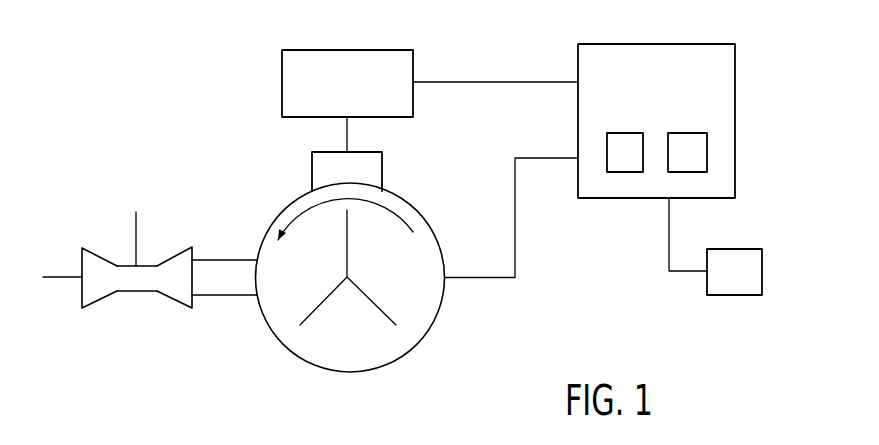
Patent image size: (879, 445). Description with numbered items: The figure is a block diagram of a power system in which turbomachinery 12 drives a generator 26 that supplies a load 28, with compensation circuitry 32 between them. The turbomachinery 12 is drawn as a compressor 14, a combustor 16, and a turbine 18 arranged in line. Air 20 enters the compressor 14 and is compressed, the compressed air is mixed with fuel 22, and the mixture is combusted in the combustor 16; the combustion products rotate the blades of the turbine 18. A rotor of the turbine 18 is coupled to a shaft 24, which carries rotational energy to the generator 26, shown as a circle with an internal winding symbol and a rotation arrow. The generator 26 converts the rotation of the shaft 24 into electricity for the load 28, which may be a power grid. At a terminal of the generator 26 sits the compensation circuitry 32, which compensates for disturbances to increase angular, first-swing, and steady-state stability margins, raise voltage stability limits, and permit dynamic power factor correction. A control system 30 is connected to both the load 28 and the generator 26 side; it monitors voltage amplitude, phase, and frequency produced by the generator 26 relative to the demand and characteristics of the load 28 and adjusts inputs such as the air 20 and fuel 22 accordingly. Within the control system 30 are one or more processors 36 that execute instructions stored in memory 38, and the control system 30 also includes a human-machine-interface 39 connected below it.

The turbomachinery 12 is at (116, 302).
The compressor 14 is at (100, 256).
The combustor 16 is at (138, 292).
The turbine 18 is at (173, 299).
The air 20 is at (62, 278).
The fuel 22 is at (137, 233).
The shaft 24 is at (230, 260).
The generator 26 is at (433, 325).
The load 28 is at (347, 50).
The control system 30 is at (673, 121).
The compensation circuitry 32 is at (382, 172).
The processors 36 is at (625, 133).
The memory 38 is at (688, 172).
The human-machine-interface 39 is at (735, 295).